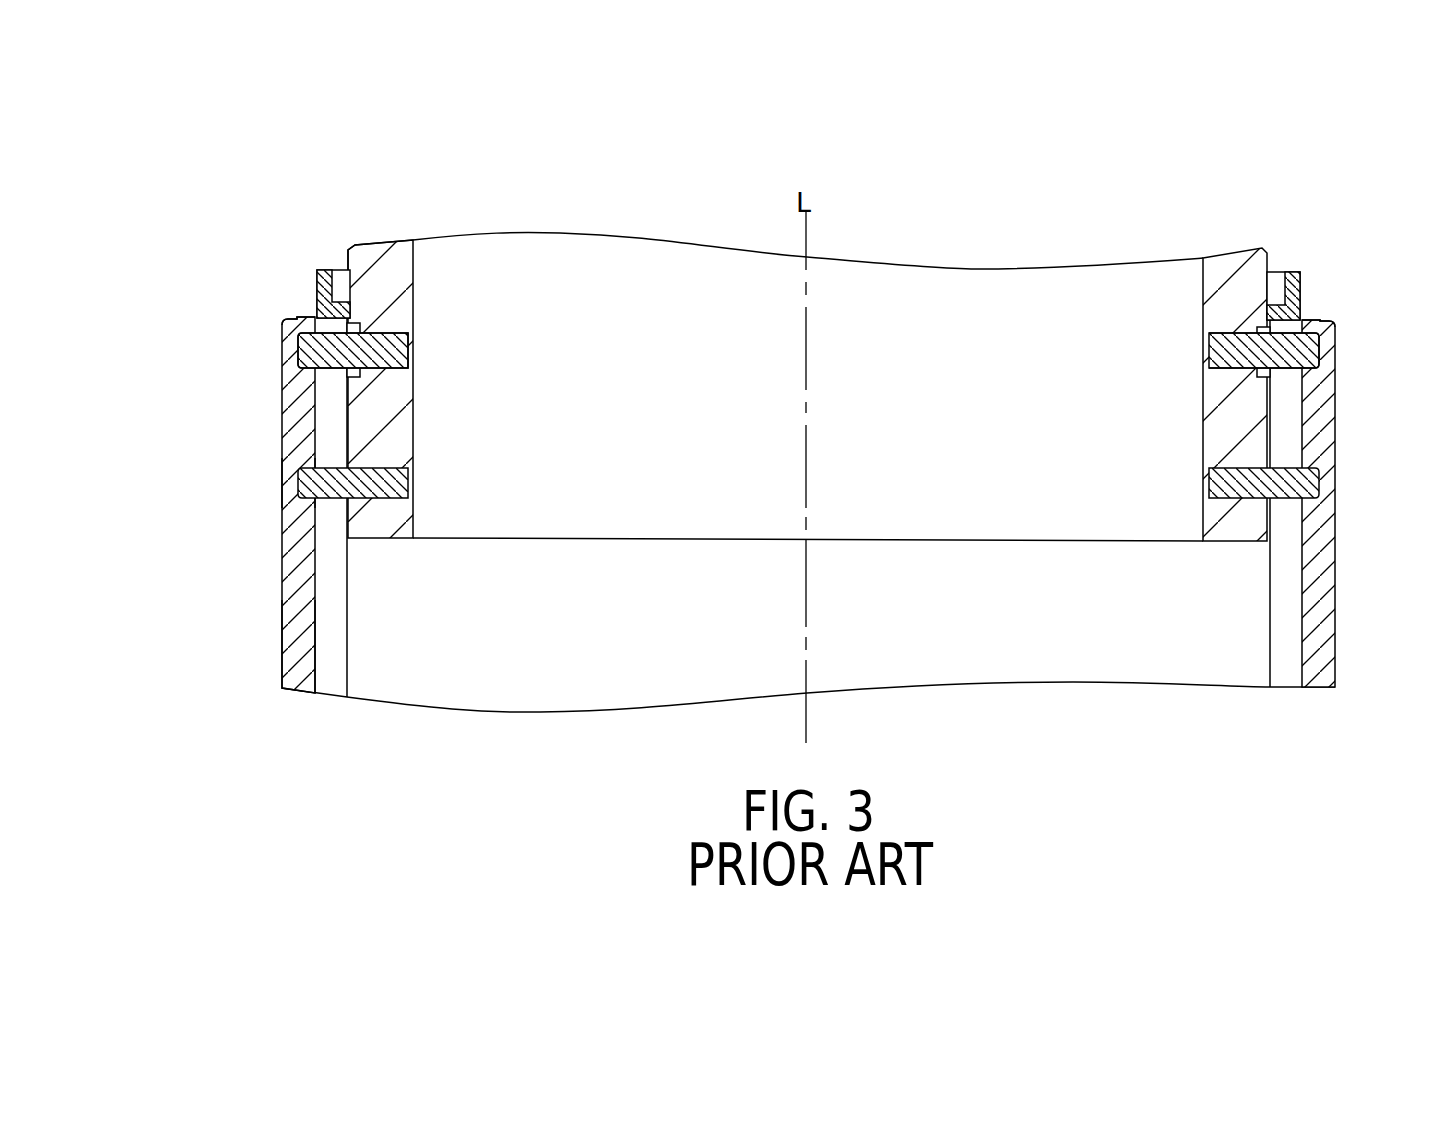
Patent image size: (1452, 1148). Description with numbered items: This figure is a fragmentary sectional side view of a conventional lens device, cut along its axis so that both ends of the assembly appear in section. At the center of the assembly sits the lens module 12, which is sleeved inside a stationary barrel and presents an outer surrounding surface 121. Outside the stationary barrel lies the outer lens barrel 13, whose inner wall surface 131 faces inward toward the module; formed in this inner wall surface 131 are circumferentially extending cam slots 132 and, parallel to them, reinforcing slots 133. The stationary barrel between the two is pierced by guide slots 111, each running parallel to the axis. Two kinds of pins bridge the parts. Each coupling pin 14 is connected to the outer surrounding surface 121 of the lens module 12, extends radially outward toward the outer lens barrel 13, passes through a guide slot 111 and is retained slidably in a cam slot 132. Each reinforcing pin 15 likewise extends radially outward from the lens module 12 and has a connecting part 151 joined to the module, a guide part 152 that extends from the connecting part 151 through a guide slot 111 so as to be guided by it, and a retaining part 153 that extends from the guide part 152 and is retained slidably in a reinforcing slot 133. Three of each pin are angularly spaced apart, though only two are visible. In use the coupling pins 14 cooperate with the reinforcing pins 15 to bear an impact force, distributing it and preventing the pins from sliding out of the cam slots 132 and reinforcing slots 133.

The guide slot 111 is at (330, 680).
The lens module 12 is at (368, 243).
The outer surrounding surface 121 is at (350, 257).
The outer lens barrel 13 is at (282, 550).
The inner wall surface 131 is at (310, 615).
The cam slot 132 is at (305, 466).
The reinforcing slot 133 is at (300, 310).
The coupling pin 14 is at (412, 470).
The reinforcing pin 15 is at (290, 338).
The connecting part 151 is at (393, 345).
The guide part 152 is at (305, 325).
The retaining part 153 is at (304, 368).